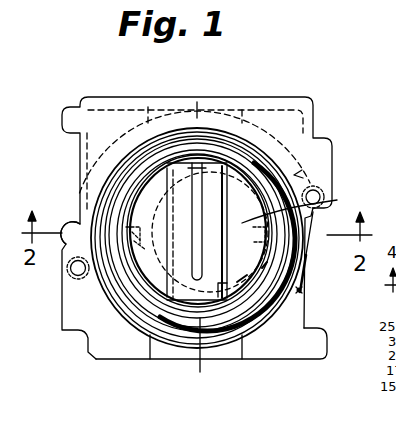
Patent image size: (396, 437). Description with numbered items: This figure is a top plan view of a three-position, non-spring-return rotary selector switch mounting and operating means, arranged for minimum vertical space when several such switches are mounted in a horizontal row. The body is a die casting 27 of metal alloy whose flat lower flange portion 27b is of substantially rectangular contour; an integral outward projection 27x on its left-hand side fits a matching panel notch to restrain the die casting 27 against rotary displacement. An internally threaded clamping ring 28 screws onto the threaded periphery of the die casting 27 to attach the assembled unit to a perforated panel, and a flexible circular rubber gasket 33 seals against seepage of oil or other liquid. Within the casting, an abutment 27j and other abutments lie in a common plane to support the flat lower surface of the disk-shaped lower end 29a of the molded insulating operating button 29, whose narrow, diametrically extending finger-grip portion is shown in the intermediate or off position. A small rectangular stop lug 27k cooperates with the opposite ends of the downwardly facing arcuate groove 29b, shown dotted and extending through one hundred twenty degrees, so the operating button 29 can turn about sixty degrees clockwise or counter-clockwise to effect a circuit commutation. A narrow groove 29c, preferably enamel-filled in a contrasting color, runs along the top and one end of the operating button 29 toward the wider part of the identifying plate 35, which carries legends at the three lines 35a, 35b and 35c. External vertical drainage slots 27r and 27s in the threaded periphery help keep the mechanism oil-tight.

The die casting 27 is at (156, 360).
The flange portion 27b is at (292, 350).
The abutment 27j is at (143, 244).
The stop lug 27k is at (305, 268).
The drainage slot 27r is at (311, 250).
The drainage slot 27s is at (212, 355).
The outward projection 27x is at (77, 220).
The clamping ring 28 is at (247, 316).
The operating button 29 is at (227, 186).
The lower end of operating button 29a is at (256, 232).
The arcuate groove 29b is at (303, 290).
The groove 29c is at (190, 216).
The rubber gasket 33 is at (103, 293).
The identifying plate 35 is at (263, 99).
The indicia line 35a is at (97, 176).
The indicia line 35b is at (200, 110).
The indicia line 35c is at (294, 175).